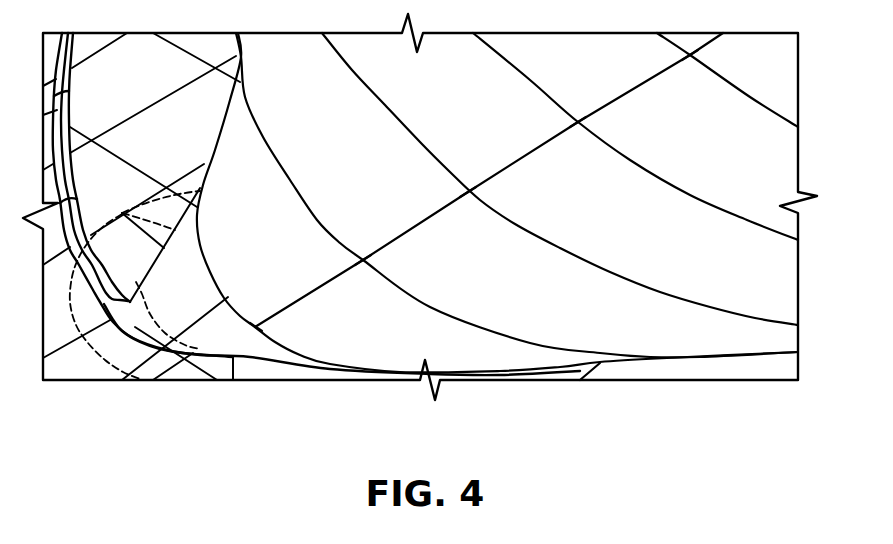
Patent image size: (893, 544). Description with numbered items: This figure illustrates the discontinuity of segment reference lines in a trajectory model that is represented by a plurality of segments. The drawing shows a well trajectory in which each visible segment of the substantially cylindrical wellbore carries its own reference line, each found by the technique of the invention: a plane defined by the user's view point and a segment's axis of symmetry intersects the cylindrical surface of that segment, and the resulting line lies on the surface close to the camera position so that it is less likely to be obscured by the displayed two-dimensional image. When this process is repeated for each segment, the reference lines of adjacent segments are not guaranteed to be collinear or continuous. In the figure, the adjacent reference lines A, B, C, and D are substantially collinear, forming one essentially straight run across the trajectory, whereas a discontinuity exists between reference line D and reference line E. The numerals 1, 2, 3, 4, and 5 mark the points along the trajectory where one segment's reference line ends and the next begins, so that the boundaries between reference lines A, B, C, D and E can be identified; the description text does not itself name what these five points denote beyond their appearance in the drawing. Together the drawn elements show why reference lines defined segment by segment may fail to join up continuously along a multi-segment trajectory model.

The reference point 1 on the surface line 1 is at (690, 67).
The reference point 2 on the surface line 2 is at (578, 134).
The reference point 3 on the surface line 3 is at (468, 205).
The reference point 4 on the surface line 4 is at (362, 272).
The reference point 5 on the surface line 5 is at (250, 337).
The reference line A is at (634, 88).
The reference line B is at (523, 157).
The reference line C is at (415, 226).
The reference line D is at (309, 293).
The reference line E is at (175, 338).